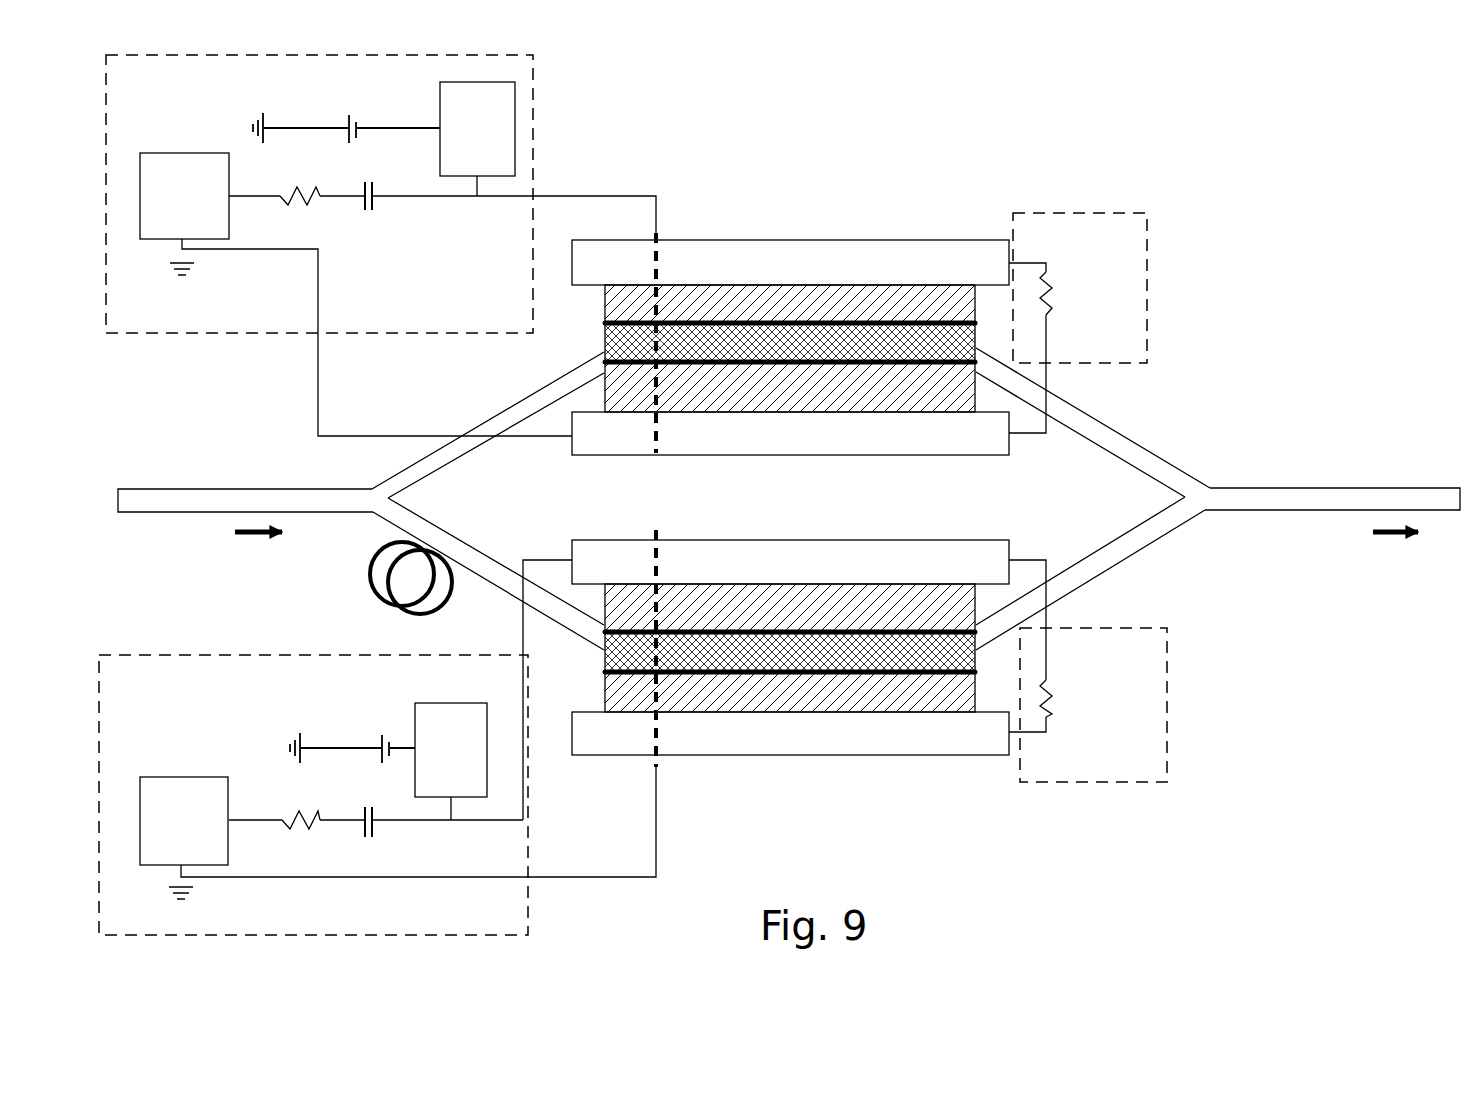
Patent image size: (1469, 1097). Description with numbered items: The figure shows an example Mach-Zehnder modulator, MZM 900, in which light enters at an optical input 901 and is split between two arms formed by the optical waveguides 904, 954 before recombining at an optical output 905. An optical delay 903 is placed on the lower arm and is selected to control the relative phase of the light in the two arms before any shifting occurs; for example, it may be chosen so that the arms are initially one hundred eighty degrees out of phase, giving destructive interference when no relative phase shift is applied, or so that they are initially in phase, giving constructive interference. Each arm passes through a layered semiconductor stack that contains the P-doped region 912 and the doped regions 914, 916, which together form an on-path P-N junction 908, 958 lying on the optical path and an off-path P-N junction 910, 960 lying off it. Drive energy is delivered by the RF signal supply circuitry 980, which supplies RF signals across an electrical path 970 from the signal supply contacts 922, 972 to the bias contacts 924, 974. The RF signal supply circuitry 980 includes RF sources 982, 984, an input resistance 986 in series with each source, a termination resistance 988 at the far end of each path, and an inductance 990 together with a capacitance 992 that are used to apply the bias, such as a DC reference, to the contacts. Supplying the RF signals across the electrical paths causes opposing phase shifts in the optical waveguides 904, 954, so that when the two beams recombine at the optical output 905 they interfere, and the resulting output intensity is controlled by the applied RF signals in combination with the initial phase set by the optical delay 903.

The MZM 900 is at (1265, 134).
The optical input 901 is at (245, 516).
The optical delay 903 is at (374, 557).
The optical waveguide 904 is at (975, 347).
The optical output 905 is at (1332, 515).
The on-path P-N junction 908 is at (600, 356).
The off-path P-N junction 910 is at (600, 320).
The P-doped region 912 is at (790, 497).
The doped region 914 is at (790, 497).
The N-doped region 916 is at (790, 498).
The signal supply contact 922 is at (790, 433).
The bias contact 924 is at (790, 262).
The optical waveguide 954 is at (976, 624).
The on-path P-N junction 958 is at (600, 627).
The off-path P-N junction 960 is at (600, 662).
The electrical path 970 is at (656, 531).
The signal supply contact 972 is at (790, 733).
The bias contact 974 is at (790, 562).
The RF signal supply circuitry 980 is at (533, 85).
The RF source 982 is at (184, 214).
The RF source 984 is at (184, 838).
The input resistance 986 is at (300, 179).
The termination resistance 988 is at (1066, 284).
The inductance 990 is at (384, 439).
The capacitance 992 is at (358, 179).